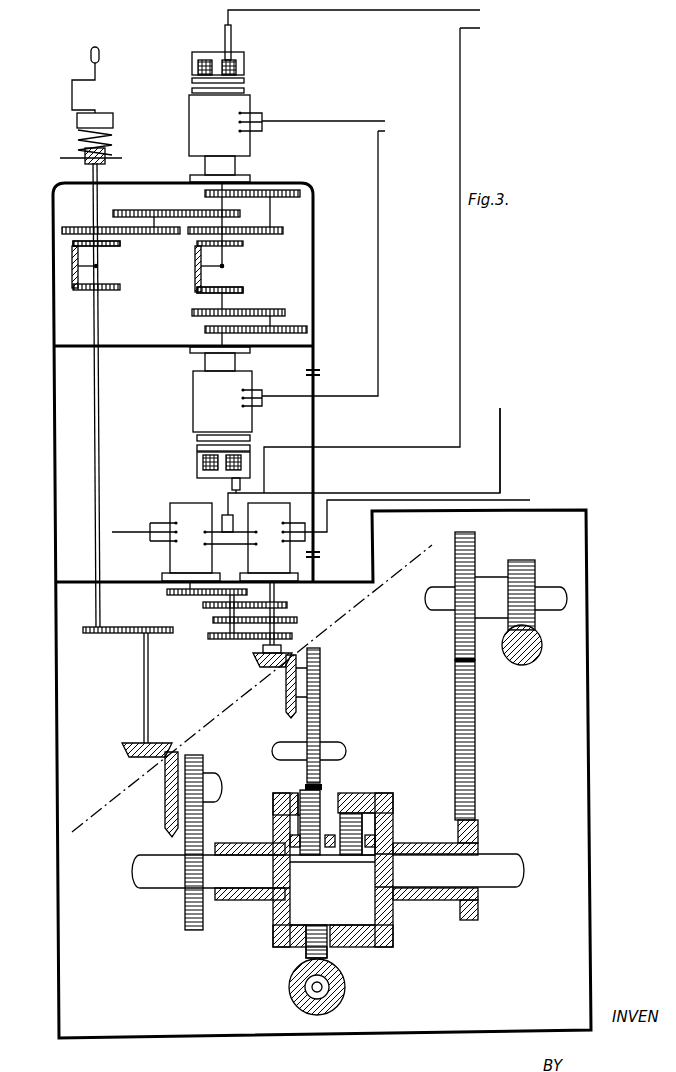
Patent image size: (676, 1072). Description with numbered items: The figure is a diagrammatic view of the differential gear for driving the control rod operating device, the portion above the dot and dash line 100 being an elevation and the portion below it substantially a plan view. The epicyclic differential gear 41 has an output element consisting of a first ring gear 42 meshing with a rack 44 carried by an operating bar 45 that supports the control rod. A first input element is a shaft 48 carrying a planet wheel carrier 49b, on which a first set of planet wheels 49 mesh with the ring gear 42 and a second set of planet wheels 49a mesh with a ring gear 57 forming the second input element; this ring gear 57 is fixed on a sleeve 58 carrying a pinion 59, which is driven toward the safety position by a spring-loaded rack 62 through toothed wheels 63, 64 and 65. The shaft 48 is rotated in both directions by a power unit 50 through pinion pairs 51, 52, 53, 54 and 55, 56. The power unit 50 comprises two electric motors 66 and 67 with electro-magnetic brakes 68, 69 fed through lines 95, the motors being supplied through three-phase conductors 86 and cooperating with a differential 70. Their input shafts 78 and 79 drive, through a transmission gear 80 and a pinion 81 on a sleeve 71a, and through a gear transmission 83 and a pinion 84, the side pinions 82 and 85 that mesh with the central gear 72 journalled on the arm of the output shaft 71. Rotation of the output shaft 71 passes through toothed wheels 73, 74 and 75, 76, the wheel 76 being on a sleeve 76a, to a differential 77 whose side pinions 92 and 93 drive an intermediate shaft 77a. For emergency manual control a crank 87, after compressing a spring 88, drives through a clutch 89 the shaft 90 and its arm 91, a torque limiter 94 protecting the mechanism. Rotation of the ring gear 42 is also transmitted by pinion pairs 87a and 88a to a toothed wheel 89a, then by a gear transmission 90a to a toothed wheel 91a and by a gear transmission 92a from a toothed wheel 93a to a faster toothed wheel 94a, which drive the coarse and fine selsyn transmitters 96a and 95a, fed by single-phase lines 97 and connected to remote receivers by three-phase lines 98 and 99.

The differential gear 41 is at (404, 914).
The first ring gear 42 is at (306, 955).
The rack 44 is at (330, 958).
The operating bar 45 is at (345, 990).
The shaft 48 is at (241, 878).
The first set of planet wheels 49 is at (297, 808).
The second set of planet wheels 49a is at (364, 810).
The planet wheel carrier 49b is at (334, 815).
The power unit 50 is at (47, 324).
The pinion 51 is at (94, 634).
The pinion 52 is at (141, 634).
The pinion 53 is at (122, 753).
The pinion 54 is at (166, 810).
The pinion 55 is at (200, 758).
The pinion 56 is at (205, 836).
The ring gear 57 is at (352, 806).
The sleeve 58 is at (420, 843).
The pinion 59 is at (478, 908).
The rack 62 is at (532, 657).
The toothed wheel 63 is at (532, 567).
The toothed wheel 64 is at (463, 549).
The toothed wheel 65 is at (475, 693).
The electric motor 66 is at (250, 102).
The electric motor 67 is at (230, 409).
The electro-magnetic brake 68 is at (244, 64).
The electro-magnetic brake 69 is at (200, 466).
The differential 70 is at (260, 292).
The output shaft 71 is at (225, 266).
The sleeve 71a is at (240, 244).
The central gear 72 is at (195, 270).
The toothed wheel 73 is at (213, 209).
The toothed wheel 74 is at (158, 211).
The toothed wheel 75 is at (153, 234).
The toothed wheel 76 is at (62, 229).
The sleeve 76a is at (111, 242).
The differential 77 is at (122, 277).
The intermediate shaft 77a is at (99, 416).
The input shaft 78 is at (240, 178).
The input shaft 79 is at (220, 335).
The transmission gear 80 is at (271, 211).
The pinion 81 is at (241, 227).
The first side pinion 82 is at (212, 258).
The gear transmission 83 is at (272, 320).
The pinion 84 is at (205, 311).
The second side pinion 85 is at (246, 292).
The three-phase conductors 86 is at (336, 257).
The crank 87 is at (75, 80).
The pair of pinions 87a is at (321, 728).
The spring 88 is at (110, 141).
The pair of pinions 88a is at (288, 680).
The clutch 89 is at (80, 157).
The toothed wheel 89a is at (290, 637).
The shaft 90 is at (93, 213).
The gear transmission 90a is at (210, 636).
The arm 91 is at (73, 264).
The toothed wheel 91a is at (170, 592).
The side pinion 92 is at (78, 242).
The gear transmission 92a is at (230, 614).
The side pinion 93 is at (80, 290).
The toothed wheel 93a is at (297, 619).
The torque limiter 94 is at (104, 116).
The toothed wheel 94a is at (285, 604).
The lines 95 is at (369, 261).
The fine adjustment selsyn transmitter 95a is at (279, 567).
The coarse adjustment selsyn transmitter 96a is at (200, 567).
The single-phase lines 97 is at (500, 439).
The three-phase lines 98 is at (427, 508).
The three-phase lines 99 is at (145, 529).
The dot and dash line 100 is at (252, 688).